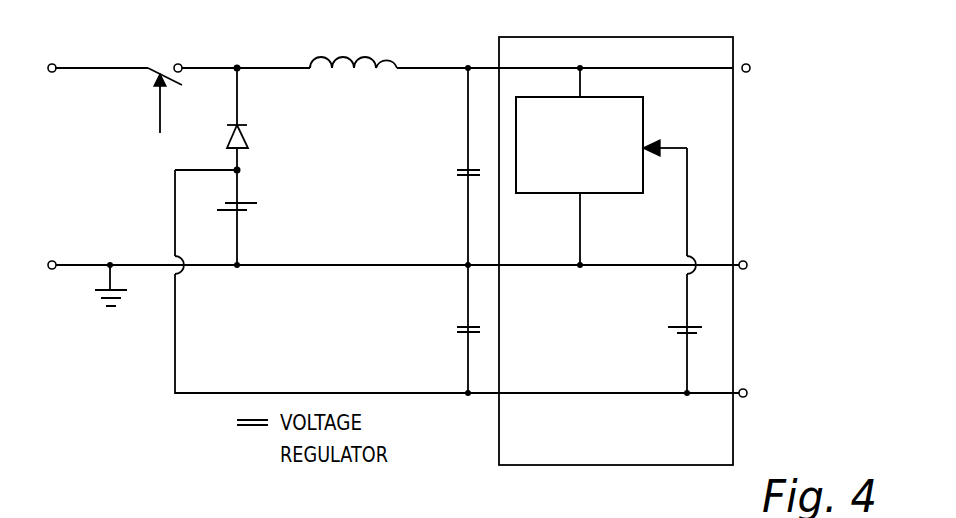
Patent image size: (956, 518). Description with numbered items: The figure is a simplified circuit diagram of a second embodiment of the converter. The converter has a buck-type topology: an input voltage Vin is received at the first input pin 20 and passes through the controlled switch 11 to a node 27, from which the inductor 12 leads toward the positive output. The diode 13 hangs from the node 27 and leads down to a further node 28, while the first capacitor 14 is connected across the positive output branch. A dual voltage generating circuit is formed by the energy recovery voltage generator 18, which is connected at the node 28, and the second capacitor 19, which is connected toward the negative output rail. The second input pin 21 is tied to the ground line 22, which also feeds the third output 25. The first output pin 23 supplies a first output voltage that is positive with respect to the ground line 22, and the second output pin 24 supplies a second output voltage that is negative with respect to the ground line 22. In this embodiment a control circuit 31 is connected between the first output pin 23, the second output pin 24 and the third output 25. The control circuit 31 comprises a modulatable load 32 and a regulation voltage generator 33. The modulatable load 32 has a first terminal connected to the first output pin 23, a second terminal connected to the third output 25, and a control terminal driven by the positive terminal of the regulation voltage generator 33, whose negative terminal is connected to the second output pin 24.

The controlled switch 11 is at (163, 75).
The inductor 12 is at (350, 67).
The diode 13 is at (250, 143).
The first capacitor 14 is at (457, 170).
The energy recovery voltage generator 18 is at (250, 205).
The second capacitor 19 is at (457, 330).
The first input pin 20 is at (52, 73).
The second input pin 21 is at (50, 260).
The ground line 22 is at (100, 293).
The first output pin 23 is at (750, 72).
The second output pin 24 is at (745, 388).
The third output 25 is at (748, 263).
The node 27 is at (236, 67).
The node 28 is at (238, 171).
The control circuit 31 is at (717, 140).
The modulatable load 32 is at (548, 177).
The regulation voltage generator 33 is at (668, 327).